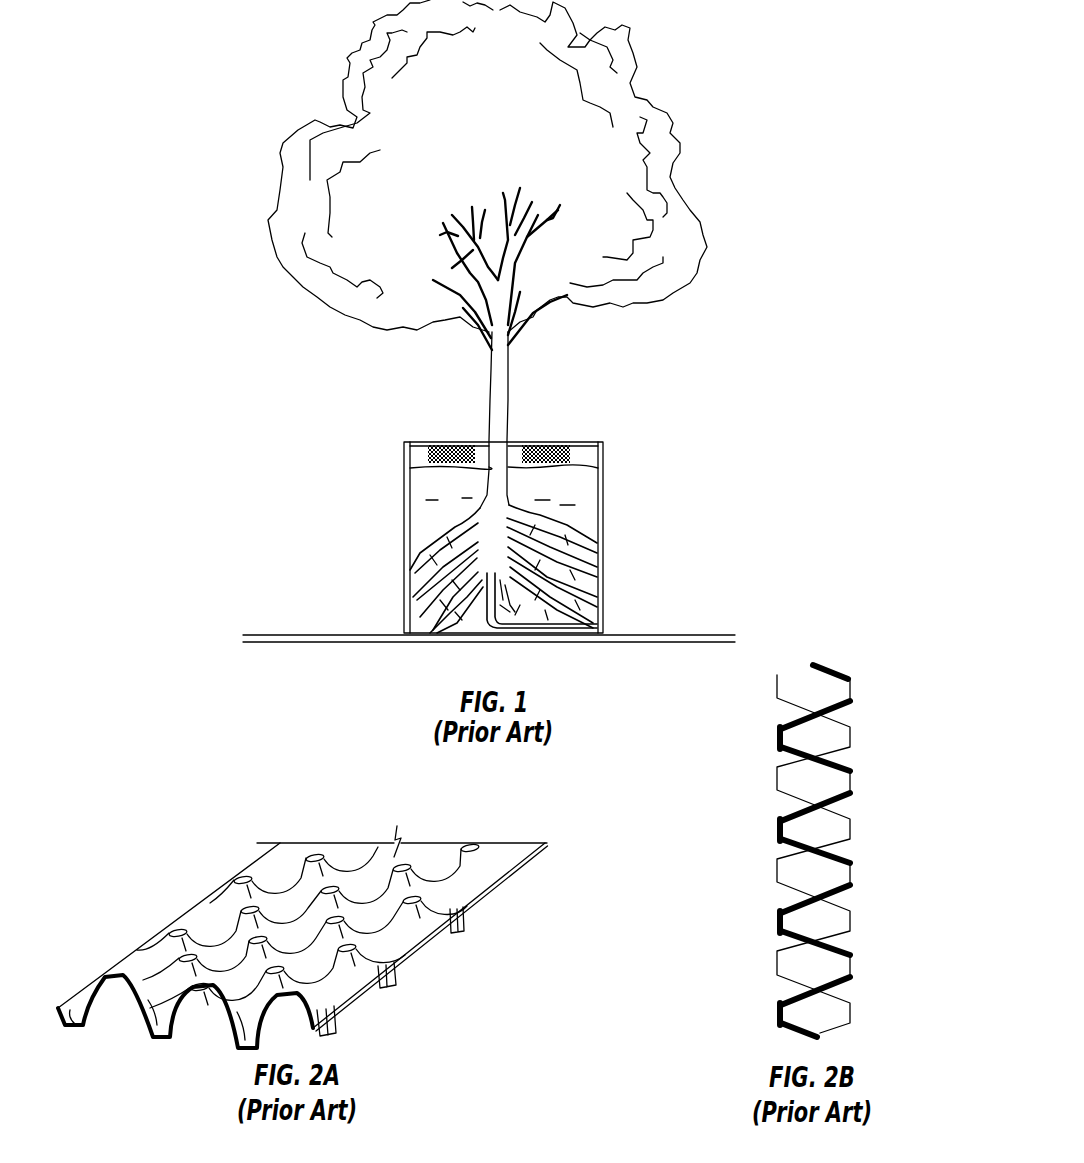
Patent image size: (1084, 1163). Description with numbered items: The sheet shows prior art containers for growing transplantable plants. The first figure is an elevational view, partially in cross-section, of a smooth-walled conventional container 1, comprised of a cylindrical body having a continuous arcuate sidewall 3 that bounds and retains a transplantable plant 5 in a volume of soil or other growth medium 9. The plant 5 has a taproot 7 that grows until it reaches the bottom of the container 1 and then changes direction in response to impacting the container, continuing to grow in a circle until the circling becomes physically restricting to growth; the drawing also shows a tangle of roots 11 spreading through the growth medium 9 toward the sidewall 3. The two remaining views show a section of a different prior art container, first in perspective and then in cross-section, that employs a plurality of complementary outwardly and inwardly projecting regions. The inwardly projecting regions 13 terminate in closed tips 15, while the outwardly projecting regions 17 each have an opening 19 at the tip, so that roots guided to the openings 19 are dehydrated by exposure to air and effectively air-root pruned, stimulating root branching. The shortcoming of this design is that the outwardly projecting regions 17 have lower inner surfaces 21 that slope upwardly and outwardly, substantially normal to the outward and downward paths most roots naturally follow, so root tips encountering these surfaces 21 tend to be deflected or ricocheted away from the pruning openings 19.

In FIG. 1, the container 1 is at (489, 339).
In FIG. 1, the continuous arcuate sidewall 3 is at (603, 548).
In FIG. 1, the transplantable plant 5 is at (488, 412).
In FIG. 1, the taproot 7 is at (488, 632).
In FIG. 1, the growth medium 9 is at (410, 512).
In FIG. 1, the roots 11 is at (557, 520).
In FIG. 2A, the inwardly projecting regions 13 is at (138, 1010).
In FIG. 2B, the inwardly projecting regions 13 is at (778, 846).
In FIG. 2A, the closed tips 15 is at (163, 1040).
In FIG. 2B, the closed tips 15 is at (780, 830).
In FIG. 2A, the outwardly projecting regions 17 is at (430, 870).
In FIG. 2B, the outwardly projecting regions 17 is at (843, 800).
In FIG. 2A, the opening 19 is at (402, 862).
In FIG. 2B, the opening 19 is at (852, 783).
In FIG. 2B, the lower inner surfaces 21 is at (783, 998).